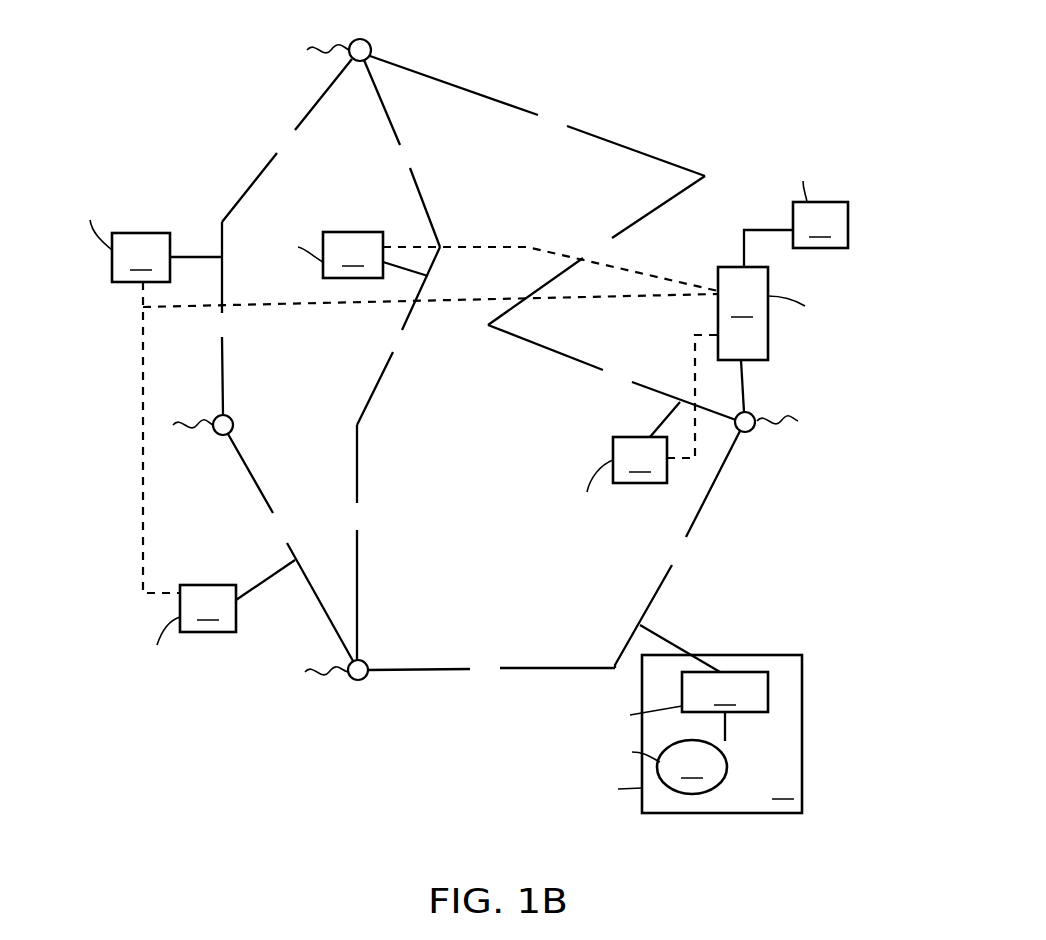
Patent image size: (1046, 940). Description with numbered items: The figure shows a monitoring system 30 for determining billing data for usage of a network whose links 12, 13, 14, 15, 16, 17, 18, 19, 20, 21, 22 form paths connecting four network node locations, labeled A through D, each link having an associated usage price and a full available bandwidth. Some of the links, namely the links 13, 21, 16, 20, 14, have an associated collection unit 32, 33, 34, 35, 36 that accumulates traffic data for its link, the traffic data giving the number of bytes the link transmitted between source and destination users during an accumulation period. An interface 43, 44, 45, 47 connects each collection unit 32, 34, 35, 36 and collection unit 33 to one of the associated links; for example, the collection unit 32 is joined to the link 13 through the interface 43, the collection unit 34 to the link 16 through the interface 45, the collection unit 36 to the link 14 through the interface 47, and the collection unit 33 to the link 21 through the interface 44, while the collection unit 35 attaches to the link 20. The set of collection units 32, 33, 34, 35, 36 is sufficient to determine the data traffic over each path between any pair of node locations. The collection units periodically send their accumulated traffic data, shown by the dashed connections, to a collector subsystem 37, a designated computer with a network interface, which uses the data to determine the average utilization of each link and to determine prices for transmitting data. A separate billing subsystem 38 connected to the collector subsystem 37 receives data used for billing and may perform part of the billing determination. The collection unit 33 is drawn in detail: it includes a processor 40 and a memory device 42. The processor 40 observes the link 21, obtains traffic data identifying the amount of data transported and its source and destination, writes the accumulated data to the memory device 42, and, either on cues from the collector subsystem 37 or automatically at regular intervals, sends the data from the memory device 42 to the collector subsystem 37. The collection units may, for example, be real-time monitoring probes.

The link 12 is at (287, 140).
The link 13 is at (222, 318).
The link 14 is at (290, 547).
The link 15 is at (402, 153).
The link 16 is at (398, 336).
The link 17 is at (359, 542).
The link 18 is at (537, 116).
The link 19 is at (596, 250).
The link 20 is at (612, 372).
The link 21 is at (677, 549).
The link 22 is at (491, 671).
The monitoring system 30 is at (678, 65).
The collection unit 32 is at (386, 384).
The collection unit 33 is at (642, 738).
The collection unit 34 is at (482, 250).
The collection unit 35 is at (626, 438).
The collection unit 36 is at (196, 639).
The collector subsystem 37 is at (813, 339).
The billing subsystem 38 is at (814, 202).
The processor 40 is at (635, 706).
The memory device 42 is at (628, 767).
The interface 43 is at (195, 255).
The interface 44 is at (682, 647).
The interface 45 is at (408, 270).
The interface 47 is at (258, 585).